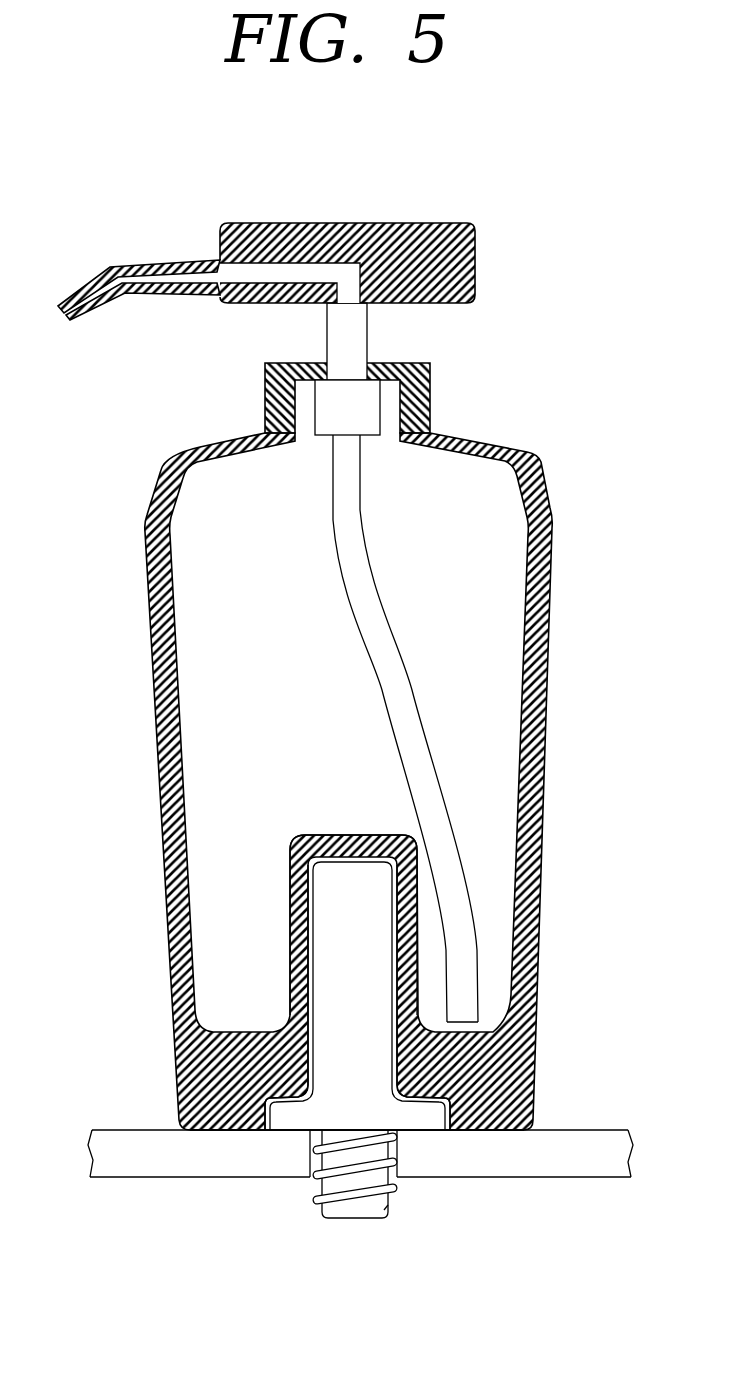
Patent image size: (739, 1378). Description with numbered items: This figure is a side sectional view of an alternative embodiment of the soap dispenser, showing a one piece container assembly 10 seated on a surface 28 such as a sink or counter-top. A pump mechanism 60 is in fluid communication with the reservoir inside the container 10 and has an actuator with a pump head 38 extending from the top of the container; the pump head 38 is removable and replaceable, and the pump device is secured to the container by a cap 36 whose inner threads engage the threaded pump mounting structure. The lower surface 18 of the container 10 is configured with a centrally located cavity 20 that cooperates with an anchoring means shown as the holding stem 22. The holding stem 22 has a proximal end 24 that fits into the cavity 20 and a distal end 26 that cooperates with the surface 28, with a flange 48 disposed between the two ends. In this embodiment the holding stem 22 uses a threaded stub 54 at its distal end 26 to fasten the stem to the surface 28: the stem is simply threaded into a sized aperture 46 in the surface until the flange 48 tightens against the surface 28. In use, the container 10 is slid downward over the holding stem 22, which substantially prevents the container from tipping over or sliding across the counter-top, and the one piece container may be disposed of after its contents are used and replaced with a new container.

The container 10 is at (560, 714).
The lower surface 18 is at (503, 1130).
The cavity 20 is at (293, 848).
The holding stem 22 is at (312, 938).
The proximal end 24 is at (328, 1012).
The distal end 26 is at (420, 1205).
The surface 28 is at (593, 1128).
The cap 36 is at (432, 400).
The pump head 38 is at (453, 222).
The aperture 46 is at (400, 1160).
The flange 48 is at (263, 1108).
The threaded stub 54 is at (323, 1212).
The pump mechanism 60 is at (358, 405).